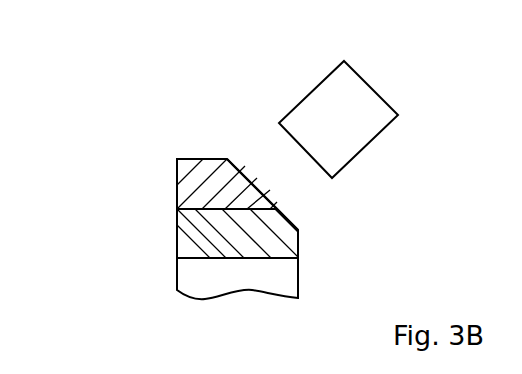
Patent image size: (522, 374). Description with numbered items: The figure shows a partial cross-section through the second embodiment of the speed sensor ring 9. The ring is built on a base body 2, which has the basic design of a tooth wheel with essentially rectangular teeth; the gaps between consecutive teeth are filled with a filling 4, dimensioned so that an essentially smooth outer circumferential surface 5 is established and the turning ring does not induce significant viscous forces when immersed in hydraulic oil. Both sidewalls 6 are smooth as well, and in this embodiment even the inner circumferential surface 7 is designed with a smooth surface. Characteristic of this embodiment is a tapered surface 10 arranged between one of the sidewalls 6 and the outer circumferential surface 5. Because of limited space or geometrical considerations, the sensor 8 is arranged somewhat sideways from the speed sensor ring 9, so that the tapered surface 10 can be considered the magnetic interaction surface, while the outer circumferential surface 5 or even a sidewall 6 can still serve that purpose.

The speed sensor ring 9 is at (132, 131).
The outer circumferential surface 5 is at (194, 158).
The filling 4 is at (222, 167).
The tapered surface 10 is at (264, 188).
The sidewall 6 is at (178, 228).
The inner circumferential surface 7 is at (242, 257).
The base body 2 is at (277, 260).
The sensor 8 is at (347, 132).